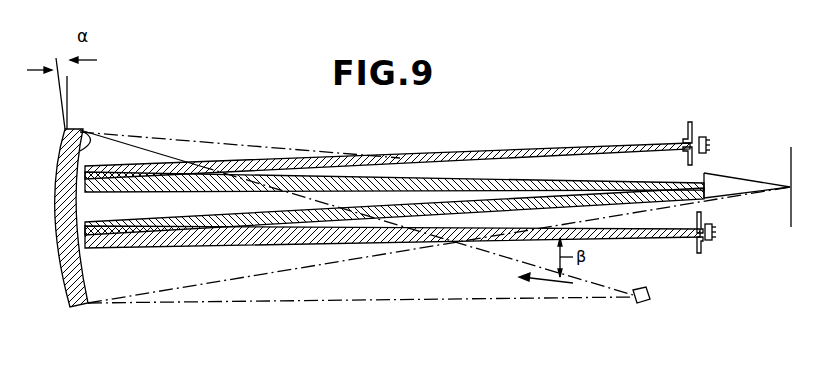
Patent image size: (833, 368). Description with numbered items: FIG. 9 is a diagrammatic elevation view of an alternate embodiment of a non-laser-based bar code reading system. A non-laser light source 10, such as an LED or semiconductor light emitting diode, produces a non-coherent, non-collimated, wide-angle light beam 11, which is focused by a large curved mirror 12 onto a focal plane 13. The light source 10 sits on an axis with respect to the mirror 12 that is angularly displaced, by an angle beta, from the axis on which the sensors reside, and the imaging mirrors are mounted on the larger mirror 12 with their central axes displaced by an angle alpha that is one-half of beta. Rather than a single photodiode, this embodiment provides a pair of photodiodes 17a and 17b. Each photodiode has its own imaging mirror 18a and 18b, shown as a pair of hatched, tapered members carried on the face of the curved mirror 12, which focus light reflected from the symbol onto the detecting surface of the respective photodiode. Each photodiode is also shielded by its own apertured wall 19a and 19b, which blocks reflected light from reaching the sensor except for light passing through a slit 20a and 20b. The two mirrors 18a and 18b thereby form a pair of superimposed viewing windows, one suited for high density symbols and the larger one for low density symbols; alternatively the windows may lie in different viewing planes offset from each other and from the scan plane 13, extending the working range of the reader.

The light source 10 is at (652, 304).
The light beam 11 is at (547, 282).
The curved mirror 12 is at (97, 137).
The plane 13 is at (791, 146).
The photodiode 17a is at (711, 241).
The photodiode 17b is at (705, 137).
The imaging mirror 18a is at (114, 248).
The imaging mirror 18b is at (115, 166).
The apertured wall 19a is at (699, 254).
The apertured wall 19b is at (688, 122).
The slit 20a is at (696, 242).
The slit 20b is at (682, 142).